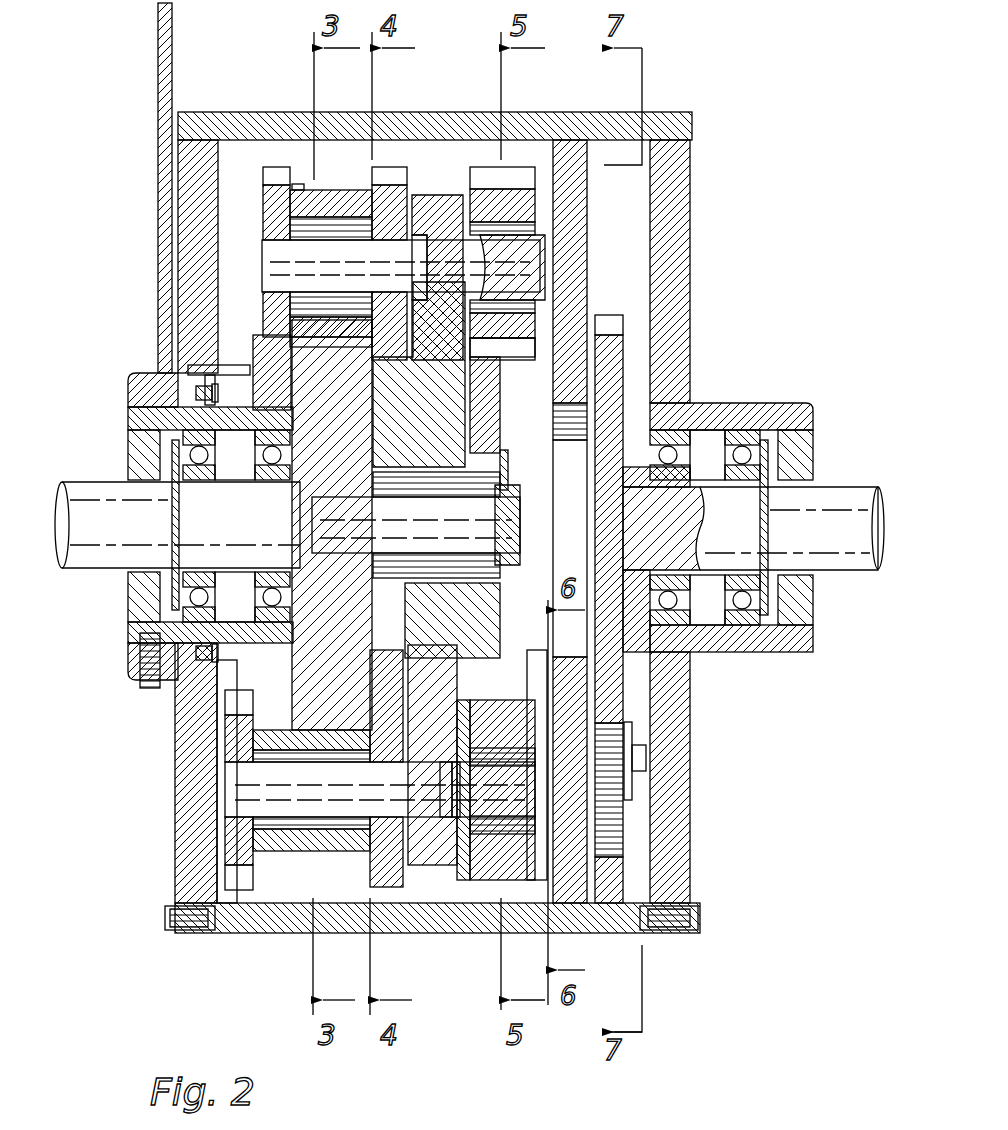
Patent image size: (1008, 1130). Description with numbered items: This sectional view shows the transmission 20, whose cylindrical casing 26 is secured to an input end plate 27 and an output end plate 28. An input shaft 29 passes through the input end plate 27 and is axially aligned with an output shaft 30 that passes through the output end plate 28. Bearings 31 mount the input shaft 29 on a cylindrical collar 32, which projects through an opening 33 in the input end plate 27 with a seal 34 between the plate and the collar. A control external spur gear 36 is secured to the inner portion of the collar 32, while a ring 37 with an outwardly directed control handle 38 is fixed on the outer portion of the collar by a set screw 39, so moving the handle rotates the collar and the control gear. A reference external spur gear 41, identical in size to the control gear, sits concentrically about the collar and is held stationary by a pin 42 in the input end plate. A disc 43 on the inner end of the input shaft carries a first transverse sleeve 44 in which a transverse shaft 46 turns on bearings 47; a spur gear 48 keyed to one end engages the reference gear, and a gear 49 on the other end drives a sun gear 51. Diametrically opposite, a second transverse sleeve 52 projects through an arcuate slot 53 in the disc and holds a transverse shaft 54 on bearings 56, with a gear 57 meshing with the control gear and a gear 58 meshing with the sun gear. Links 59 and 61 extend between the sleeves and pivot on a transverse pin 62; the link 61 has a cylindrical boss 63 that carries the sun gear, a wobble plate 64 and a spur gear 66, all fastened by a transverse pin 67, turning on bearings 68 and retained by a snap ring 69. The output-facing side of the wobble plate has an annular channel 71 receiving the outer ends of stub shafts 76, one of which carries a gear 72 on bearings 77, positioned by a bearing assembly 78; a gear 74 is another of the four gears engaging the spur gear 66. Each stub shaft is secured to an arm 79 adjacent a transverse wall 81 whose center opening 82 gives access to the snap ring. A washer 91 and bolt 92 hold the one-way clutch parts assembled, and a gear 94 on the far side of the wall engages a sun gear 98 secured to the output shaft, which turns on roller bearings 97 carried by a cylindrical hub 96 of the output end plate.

The transmission 20 is at (728, 118).
The casing 26 is at (255, 118).
The input end plate 27 is at (195, 205).
The output end plate 28 is at (678, 208).
The input shaft 29 is at (92, 495).
The output shaft 30 is at (850, 495).
The bearings 31 is at (198, 466).
The cylindrical collar 32 is at (130, 412).
The opening 33 is at (200, 655).
The seal 34 is at (215, 665).
The control external spur gear 36 is at (266, 352).
The ring 37 is at (135, 385).
The control handle 38 is at (165, 222).
The set screw 39 is at (150, 682).
The reference external spur gear 41 is at (238, 682).
The pin 42 is at (205, 370).
The disc 43 is at (305, 410).
The first transverse sleeve 44 is at (276, 835).
The transverse shaft 46 is at (380, 789).
The bearings 47 is at (352, 828).
The spur gear 48 is at (240, 870).
The gear 49 is at (380, 832).
The sun gear 51 is at (390, 428).
The second transverse sleeve 52 is at (345, 320).
The arcuate slot 53 is at (300, 188).
The transverse shaft 54 is at (350, 259).
The bearings 56 is at (335, 216).
The gear 57 is at (268, 205).
The gear 58 is at (400, 205).
The link 59 is at (355, 421).
The link 61 is at (350, 683).
The transverse pin 62 is at (416, 525).
The cylindrical boss 63 is at (512, 490).
The wobble plate 64 is at (437, 198).
The spur gear 66 is at (488, 402).
The transverse pin 67 is at (488, 630).
The bearings 68 is at (475, 578).
The snap ring 69 is at (504, 460).
The annular channel 71 is at (462, 842).
The gear 72 is at (490, 830).
The gear 74 is at (510, 200).
The stub shaft 76 is at (447, 820).
The bearings 77 is at (485, 758).
The bearing assembly 78 is at (456, 836).
The arm 79 is at (545, 700).
The transverse wall 81 is at (578, 892).
The center opening 82 is at (560, 556).
The washer 91 is at (634, 732).
The bolt 92 is at (648, 758).
The gear 94 is at (618, 828).
The cylindrical hub 96 is at (740, 412).
The roller bearings 97 is at (688, 548).
The sun gear 98 is at (612, 330).